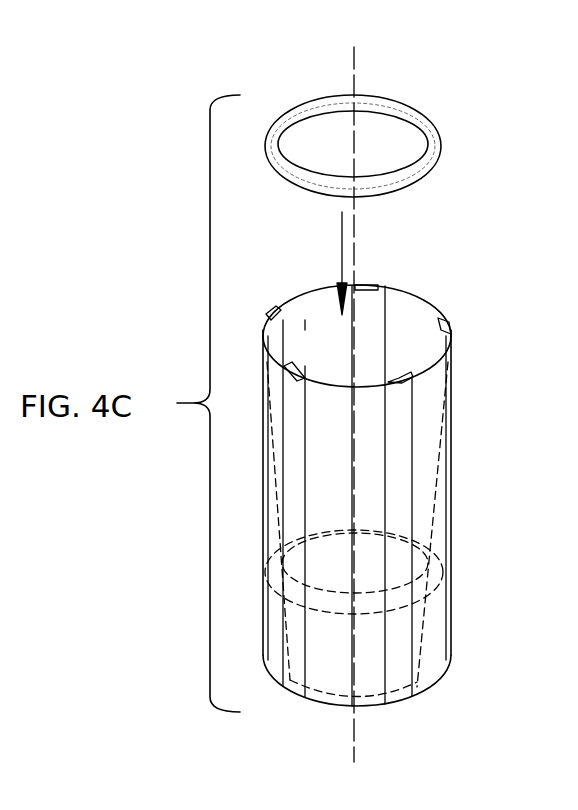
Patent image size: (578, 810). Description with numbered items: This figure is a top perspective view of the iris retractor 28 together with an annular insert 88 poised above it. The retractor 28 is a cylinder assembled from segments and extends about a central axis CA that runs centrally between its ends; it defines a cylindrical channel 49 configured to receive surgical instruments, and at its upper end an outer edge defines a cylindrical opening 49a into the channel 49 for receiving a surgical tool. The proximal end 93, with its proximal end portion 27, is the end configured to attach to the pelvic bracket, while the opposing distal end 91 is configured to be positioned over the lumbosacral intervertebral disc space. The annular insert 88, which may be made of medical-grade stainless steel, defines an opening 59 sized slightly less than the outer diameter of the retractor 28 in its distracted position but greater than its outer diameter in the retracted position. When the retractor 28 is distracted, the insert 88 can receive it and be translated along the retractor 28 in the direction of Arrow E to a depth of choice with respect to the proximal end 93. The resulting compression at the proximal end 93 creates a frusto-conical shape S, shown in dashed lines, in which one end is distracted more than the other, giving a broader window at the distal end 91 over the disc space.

The central axis CA is at (353, 56).
The opening 59 is at (359, 124).
The annular insert 88 is at (427, 165).
The Arrow E is at (340, 233).
The cylindrical opening 49a is at (377, 309).
The cylindrical channel 49 is at (377, 309).
The proximal end 93 is at (425, 304).
The proximal end portion 27 is at (393, 499).
The retractor 28 is at (412, 473).
The frusto-conical shape S is at (440, 514).
The distal end 91 is at (430, 686).